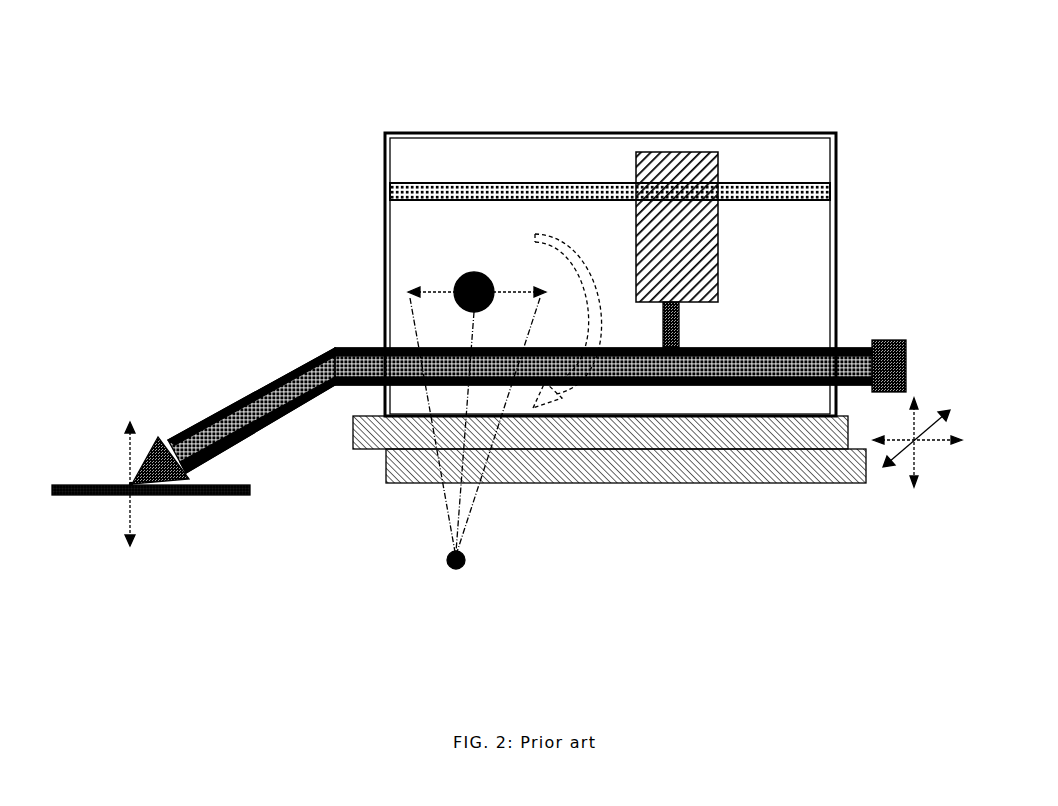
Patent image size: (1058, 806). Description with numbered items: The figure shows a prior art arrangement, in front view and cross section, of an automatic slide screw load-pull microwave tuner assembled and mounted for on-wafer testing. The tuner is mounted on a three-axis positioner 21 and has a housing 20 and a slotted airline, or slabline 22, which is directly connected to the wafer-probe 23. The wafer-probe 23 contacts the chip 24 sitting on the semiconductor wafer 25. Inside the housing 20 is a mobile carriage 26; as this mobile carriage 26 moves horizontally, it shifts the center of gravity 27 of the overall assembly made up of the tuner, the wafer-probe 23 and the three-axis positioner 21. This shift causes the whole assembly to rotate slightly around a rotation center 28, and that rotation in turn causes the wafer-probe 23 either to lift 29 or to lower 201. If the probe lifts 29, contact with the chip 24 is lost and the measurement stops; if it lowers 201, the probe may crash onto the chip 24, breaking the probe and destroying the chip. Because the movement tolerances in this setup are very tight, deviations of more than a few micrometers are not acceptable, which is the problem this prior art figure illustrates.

The housing 20 is at (803, 133).
The 3-axis positioner 21 is at (866, 470).
The slotted airline (slabline) 22 is at (277, 383).
The wafer-probe 23 is at (160, 437).
The chip 24 is at (130, 482).
The semiconductor wafer 25 is at (220, 495).
The mobile carriage 26 is at (637, 152).
The center of gravity 27 is at (457, 282).
The rotation center 28 is at (465, 565).
The lift 29 is at (132, 430).
The lower 201 is at (128, 525).